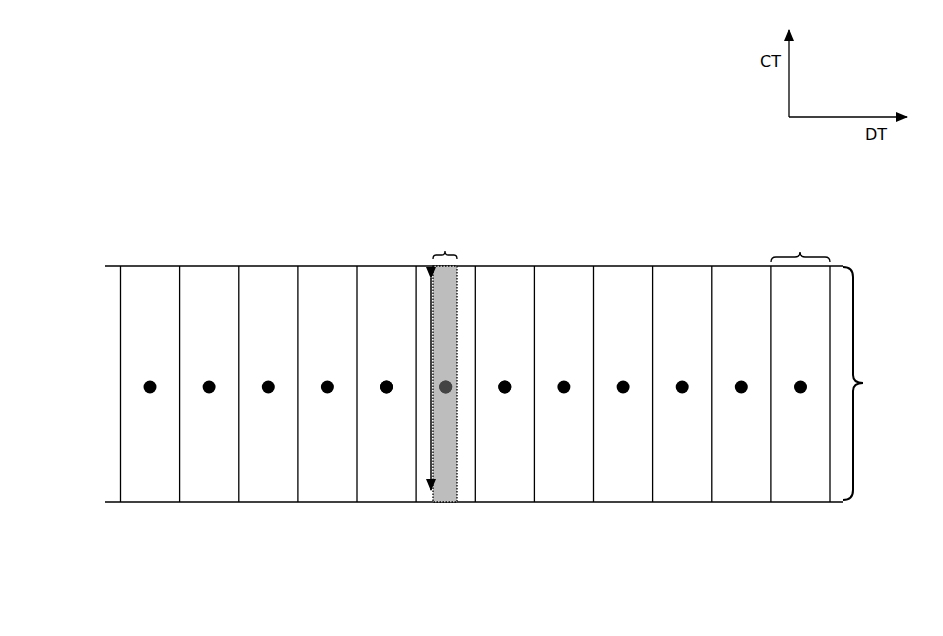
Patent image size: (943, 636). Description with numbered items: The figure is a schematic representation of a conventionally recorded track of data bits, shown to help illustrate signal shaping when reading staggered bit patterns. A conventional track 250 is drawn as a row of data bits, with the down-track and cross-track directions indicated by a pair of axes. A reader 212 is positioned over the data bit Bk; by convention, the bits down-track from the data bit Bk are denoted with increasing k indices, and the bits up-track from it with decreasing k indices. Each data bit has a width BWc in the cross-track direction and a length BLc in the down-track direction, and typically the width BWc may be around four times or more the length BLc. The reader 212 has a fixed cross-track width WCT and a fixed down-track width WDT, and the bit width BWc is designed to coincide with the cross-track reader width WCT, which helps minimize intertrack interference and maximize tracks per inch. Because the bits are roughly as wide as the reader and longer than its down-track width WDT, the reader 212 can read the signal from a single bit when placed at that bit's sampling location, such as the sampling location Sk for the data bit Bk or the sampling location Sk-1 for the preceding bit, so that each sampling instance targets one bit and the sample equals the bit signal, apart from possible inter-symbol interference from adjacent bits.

The reader 212 is at (457, 283).
The conventional track 250 is at (80, 386).
The data bit Bk is at (446, 370).
The cross-track reader width WCT is at (432, 303).
The down-track reader width WDT is at (451, 243).
The sampling location Sk-1 is at (386, 393).
The sampling location Sk is at (446, 393).
The bit length BLc is at (800, 244).
The bit width BWc is at (882, 383).